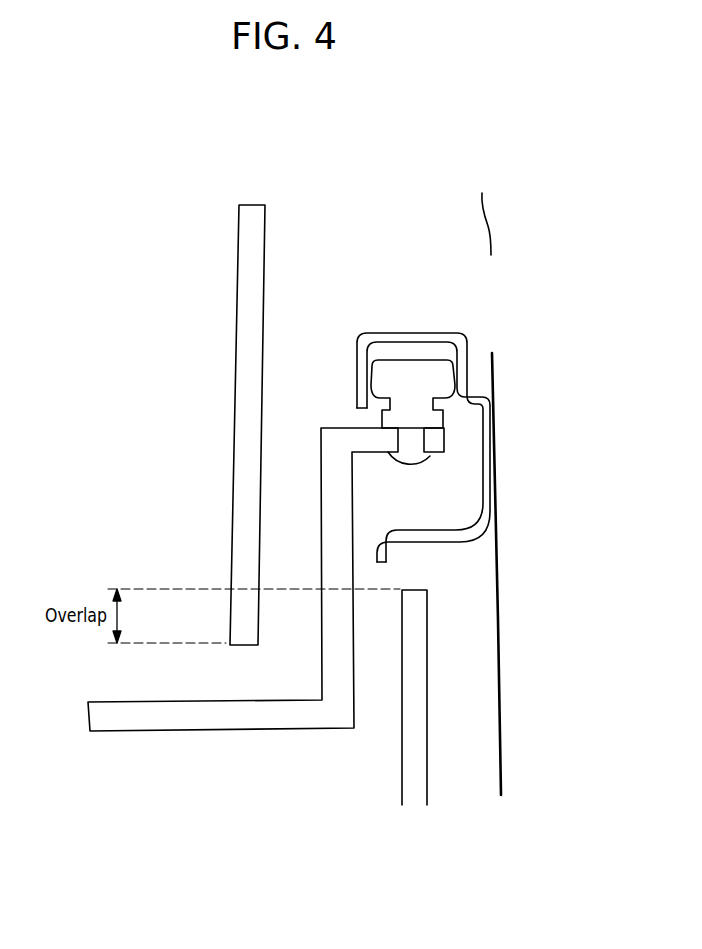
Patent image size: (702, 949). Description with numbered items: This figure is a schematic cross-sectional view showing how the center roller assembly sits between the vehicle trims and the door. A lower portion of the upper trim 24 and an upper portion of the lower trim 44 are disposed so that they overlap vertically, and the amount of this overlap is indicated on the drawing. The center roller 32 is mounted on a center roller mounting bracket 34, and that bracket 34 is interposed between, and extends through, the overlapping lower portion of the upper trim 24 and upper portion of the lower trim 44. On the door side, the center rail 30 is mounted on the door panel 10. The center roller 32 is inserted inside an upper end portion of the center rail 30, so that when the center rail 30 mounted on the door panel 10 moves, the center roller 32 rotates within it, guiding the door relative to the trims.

The door panel 10 is at (498, 628).
The upper trim 24 is at (246, 343).
The center rail 30 is at (467, 382).
The center roller 32 is at (415, 372).
The center roller mounting bracket 34 is at (153, 720).
The lower trim 44 is at (410, 782).